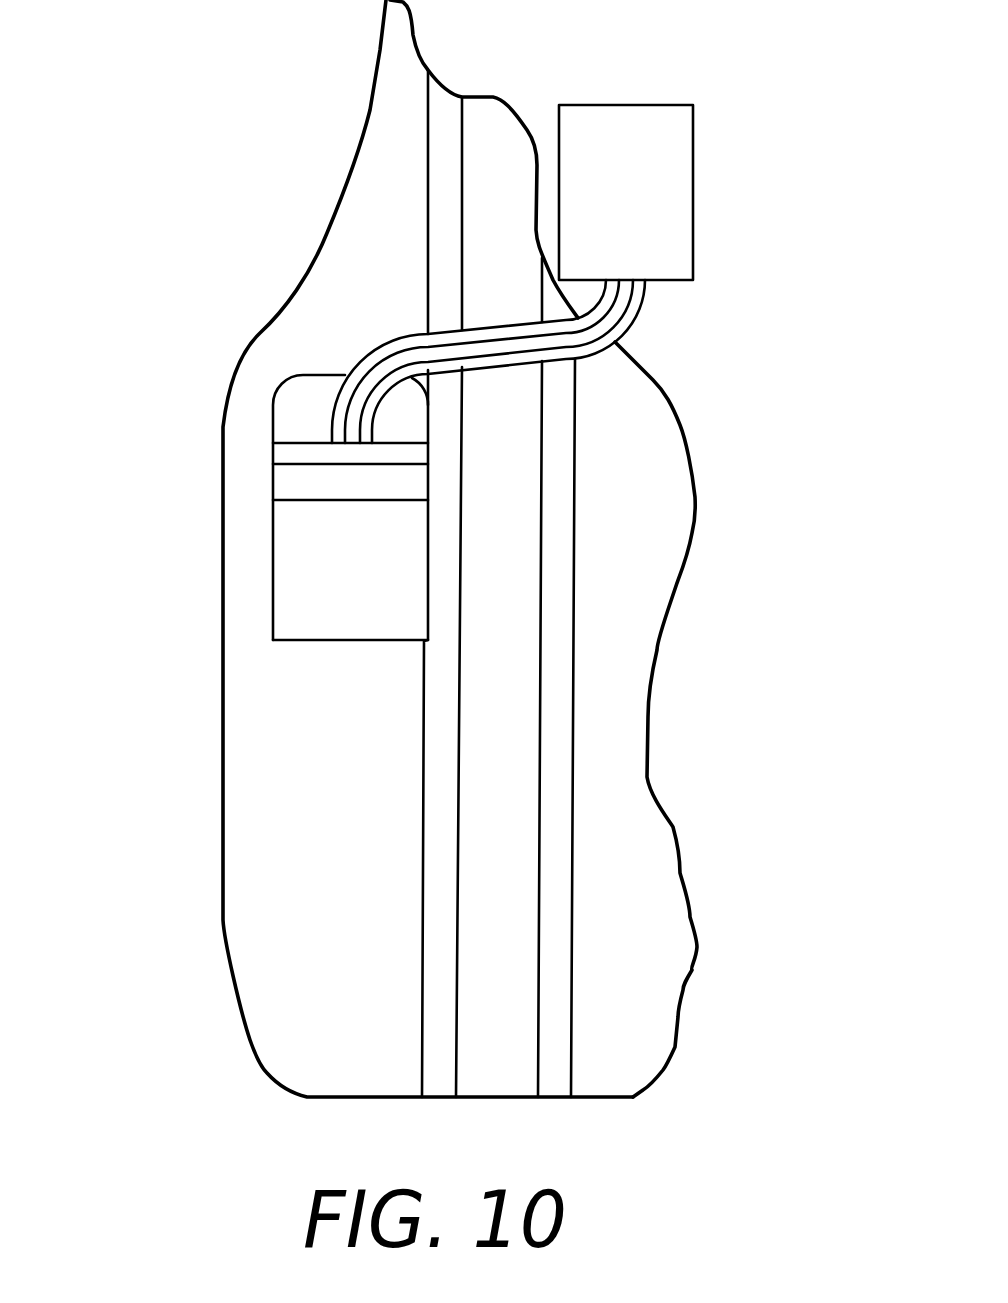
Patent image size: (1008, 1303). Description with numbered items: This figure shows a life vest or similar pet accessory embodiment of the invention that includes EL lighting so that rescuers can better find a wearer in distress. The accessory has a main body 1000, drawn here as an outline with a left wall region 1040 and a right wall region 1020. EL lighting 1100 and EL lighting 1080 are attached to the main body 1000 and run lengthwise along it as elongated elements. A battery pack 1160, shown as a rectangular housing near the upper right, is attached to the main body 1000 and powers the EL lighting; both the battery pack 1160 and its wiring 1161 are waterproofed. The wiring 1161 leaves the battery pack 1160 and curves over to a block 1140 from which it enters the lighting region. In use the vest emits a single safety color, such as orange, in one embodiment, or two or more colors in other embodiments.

The main body 1000 is at (451, 548).
The housing right wall 1020 is at (720, 470).
The housing left wall 1040 is at (187, 687).
The EL lighting 1080 is at (433, 866).
The EL lighting 1100 is at (560, 932).
The connector block 1140 is at (307, 556).
The battery pack 1160 is at (678, 178).
The wiring 1161 is at (638, 293).